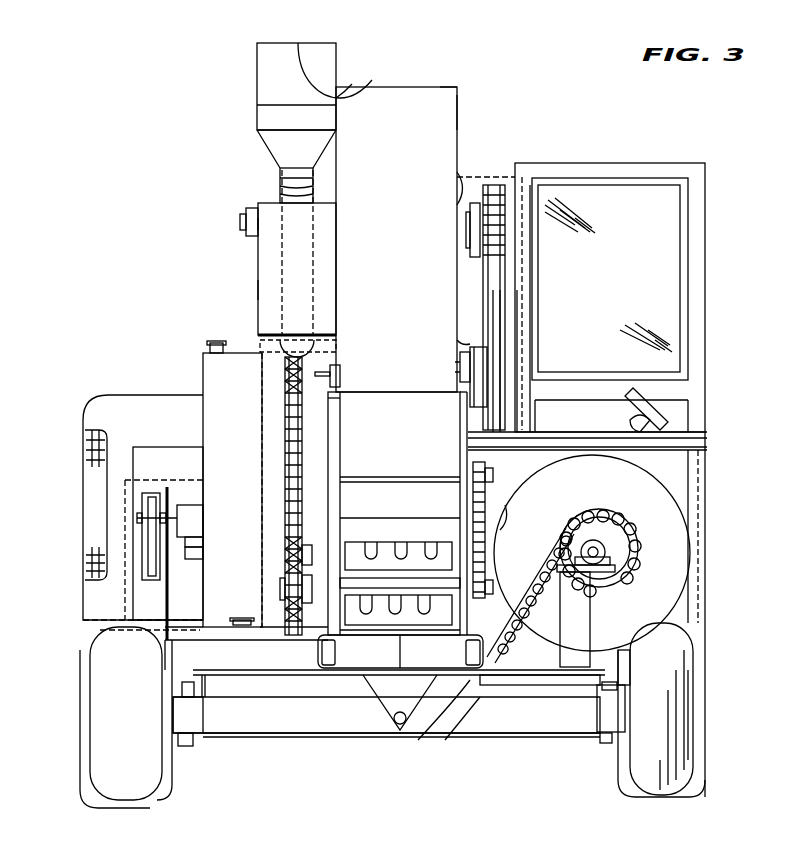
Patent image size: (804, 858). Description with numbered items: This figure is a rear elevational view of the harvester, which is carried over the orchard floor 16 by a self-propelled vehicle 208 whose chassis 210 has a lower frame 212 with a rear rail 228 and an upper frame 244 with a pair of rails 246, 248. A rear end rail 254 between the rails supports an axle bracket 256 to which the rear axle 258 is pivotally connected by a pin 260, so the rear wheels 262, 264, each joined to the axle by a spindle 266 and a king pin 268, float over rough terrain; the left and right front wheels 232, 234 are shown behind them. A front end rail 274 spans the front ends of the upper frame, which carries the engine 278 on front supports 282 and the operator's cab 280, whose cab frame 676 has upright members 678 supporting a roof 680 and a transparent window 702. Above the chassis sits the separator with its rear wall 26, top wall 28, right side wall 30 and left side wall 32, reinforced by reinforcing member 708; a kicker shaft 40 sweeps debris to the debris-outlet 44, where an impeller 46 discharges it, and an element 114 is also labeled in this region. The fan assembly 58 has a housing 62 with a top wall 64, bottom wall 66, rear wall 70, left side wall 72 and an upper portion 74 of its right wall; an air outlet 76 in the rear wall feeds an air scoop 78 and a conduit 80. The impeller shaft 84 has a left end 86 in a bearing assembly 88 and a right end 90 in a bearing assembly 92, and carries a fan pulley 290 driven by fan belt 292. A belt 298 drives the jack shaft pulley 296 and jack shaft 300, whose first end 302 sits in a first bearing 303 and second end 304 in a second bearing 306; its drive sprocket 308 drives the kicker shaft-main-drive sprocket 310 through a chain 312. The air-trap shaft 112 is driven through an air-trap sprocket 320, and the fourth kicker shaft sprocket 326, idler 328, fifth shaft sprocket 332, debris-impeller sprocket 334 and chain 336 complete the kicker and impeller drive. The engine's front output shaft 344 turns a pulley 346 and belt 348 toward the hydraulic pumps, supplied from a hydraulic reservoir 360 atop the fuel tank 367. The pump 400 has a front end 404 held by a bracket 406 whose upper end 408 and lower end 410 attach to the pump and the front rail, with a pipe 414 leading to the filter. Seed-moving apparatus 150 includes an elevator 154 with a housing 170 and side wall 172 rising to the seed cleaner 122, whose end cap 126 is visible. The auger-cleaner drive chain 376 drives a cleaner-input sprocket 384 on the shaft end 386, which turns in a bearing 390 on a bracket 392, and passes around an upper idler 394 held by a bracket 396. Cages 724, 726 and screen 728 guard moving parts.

The orchard floor 16 is at (730, 146).
The rear wall 26 is at (443, 95).
The top wall 28 is at (412, 87).
The right side wall 30 is at (460, 115).
The left side wall 32 is at (336, 254).
The kicker shaft 40 is at (498, 585).
The debris-outlet 44 is at (352, 478).
The impeller 46 is at (385, 542).
The fan assembly 58 is at (252, 292).
The housing 62 is at (264, 268).
The top wall 64 is at (376, 88).
The bottom wall 66 is at (318, 335).
The rear wall 70 is at (325, 195).
The left side wall 72 is at (257, 88).
The upper portion 74 is at (336, 58).
The air outlet 76 is at (262, 118).
The air scoop 78 is at (290, 145).
The conduit 80 is at (280, 182).
The shaft 84 is at (250, 212).
The left end 86 is at (246, 238).
The bearing assembly 88 is at (300, 200).
The right end 90 is at (470, 218).
The bearing assembly 92 is at (457, 175).
The air-trap shaft 112 is at (545, 470).
The rotor plate 114 is at (368, 530).
The seed cleaner 122 is at (700, 572).
The end cap 126 is at (688, 590).
The seed-moving apparatus 150 is at (698, 428).
The elevator 154 is at (698, 410).
The housing 170 is at (605, 425).
The side wall 172 is at (605, 425).
The self-propelled vehicle 208 is at (727, 327).
The chassis 210 is at (540, 730).
The lower frame 212 is at (248, 700).
The rear rail 228 is at (578, 735).
The left front wheel 232 is at (88, 722).
The right front wheel 234 is at (706, 688).
The upper frame 244 is at (310, 733).
The rail 246 is at (297, 680).
The rail 248 is at (465, 745).
The rear end rail 254 is at (450, 738).
The axle bracket 256 is at (405, 660).
The rear axle 258 is at (340, 735).
The pin 260 is at (400, 732).
The rear wheel 262 is at (92, 770).
The rear wheel 264 is at (660, 795).
The spindle 266 is at (165, 740).
The king pin 268 is at (195, 748).
The front end rail 274 is at (300, 655).
The engine 278 is at (124, 388).
The operator's cab 280 is at (635, 153).
The front supports 282 is at (140, 640).
The fan pulley 290 is at (508, 175).
The fan belt 292 is at (500, 322).
The jack shaft pulley 296 is at (480, 335).
The belt 298 is at (493, 272).
The jack shaft 300 is at (495, 375).
The first end 302 is at (455, 385).
The first bearing 303 is at (468, 370).
The second end 304 is at (340, 392).
The second bearing 306 is at (340, 372).
The drive sprocket 308 is at (278, 375).
The kicker shaft-main-drive sprocket 310 is at (285, 550).
The chain 312 is at (288, 470).
The air-trap sprocket 320 is at (490, 465).
The fourth kicker shaft sprocket 326 is at (485, 595).
The idler 328 is at (510, 500).
The fifth shaft sprocket 332 is at (510, 503).
The debris-impeller sprocket 334 is at (285, 590).
The chain 336 is at (385, 478).
The front output shaft 344 is at (142, 522).
The pulley 346 is at (105, 545).
The belt 348 is at (145, 567).
The hydraulic reservoir 360 is at (202, 360).
The fuel tank 367 is at (196, 700).
The auger-cleaner drive chain 376 is at (595, 510).
The cleaner-input sprocket 384 is at (708, 530).
The end 386 is at (610, 540).
The bearing 390 is at (612, 552).
The bracket 392 is at (595, 615).
The upper idler 394 is at (525, 695).
The bracket 396 is at (575, 735).
The pump 400 is at (190, 507).
The front end 404 is at (203, 522).
The bracket 406 is at (195, 556).
The upper end 408 is at (178, 470).
The lower end 410 is at (180, 630).
The pipe 414 is at (258, 620).
The cab frame 676 is at (724, 233).
The upright members 678 is at (538, 280).
The roof 680 is at (658, 163).
The transparent window 702 is at (665, 215).
The reinforcing member 708 is at (355, 392).
The cage 724 is at (700, 628).
The cage 726 is at (248, 385).
The screen 728 is at (148, 480).